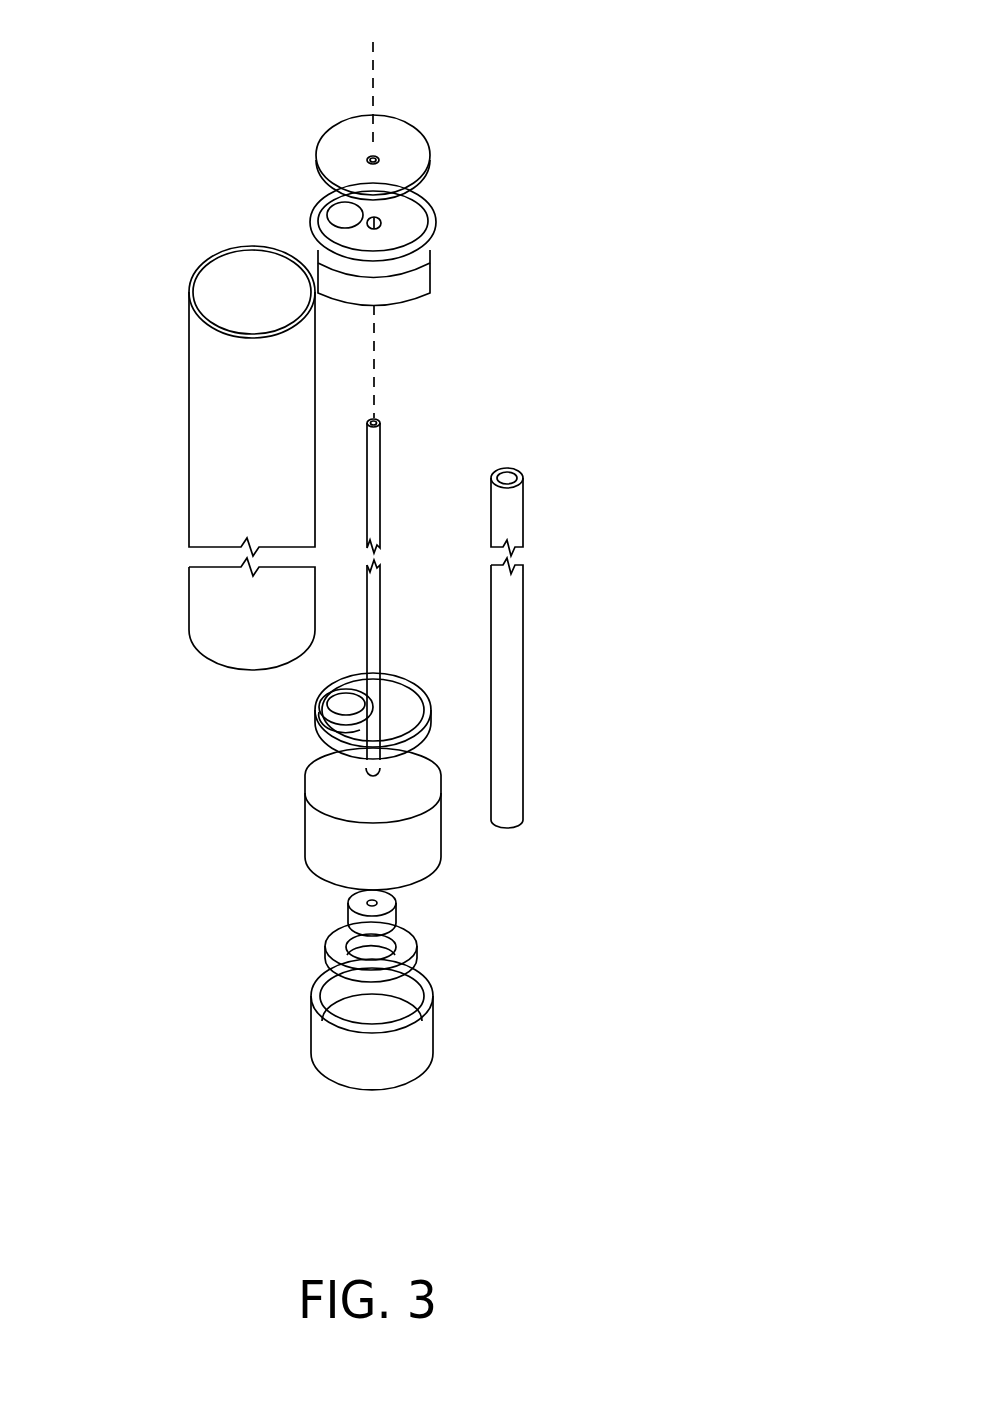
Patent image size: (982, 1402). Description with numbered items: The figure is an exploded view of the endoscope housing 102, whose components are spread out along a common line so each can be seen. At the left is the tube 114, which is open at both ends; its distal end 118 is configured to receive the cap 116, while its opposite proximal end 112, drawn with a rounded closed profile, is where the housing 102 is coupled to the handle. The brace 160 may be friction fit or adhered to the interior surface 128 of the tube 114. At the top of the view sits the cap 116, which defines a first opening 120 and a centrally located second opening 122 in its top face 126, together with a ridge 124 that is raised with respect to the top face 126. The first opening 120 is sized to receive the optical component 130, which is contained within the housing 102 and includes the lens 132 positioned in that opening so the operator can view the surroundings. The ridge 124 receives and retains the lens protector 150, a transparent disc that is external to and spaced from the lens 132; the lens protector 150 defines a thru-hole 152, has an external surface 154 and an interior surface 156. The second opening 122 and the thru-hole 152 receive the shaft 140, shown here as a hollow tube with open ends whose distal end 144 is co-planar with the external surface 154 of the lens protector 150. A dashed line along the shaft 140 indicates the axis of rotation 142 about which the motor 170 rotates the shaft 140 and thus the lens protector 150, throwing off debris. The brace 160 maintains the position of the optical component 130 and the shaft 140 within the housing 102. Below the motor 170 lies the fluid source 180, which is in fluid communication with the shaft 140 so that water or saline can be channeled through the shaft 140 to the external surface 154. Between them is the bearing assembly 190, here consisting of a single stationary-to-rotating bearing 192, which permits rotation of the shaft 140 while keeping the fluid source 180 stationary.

The housing 102 is at (168, 378).
The proximal end 112 is at (208, 658).
The tube 114 is at (189, 490).
The cap 116 is at (437, 219).
The distal end of the tube 118 is at (196, 268).
The first opening 120 is at (328, 206).
The second opening 122 is at (381, 223).
The ridge 124 is at (437, 240).
The top face 126 is at (355, 238).
The interior surface 128 is at (242, 270).
The optical component 130 is at (524, 660).
The lens 132 is at (516, 470).
The shaft 140 is at (382, 612).
The axis of rotation 142 is at (377, 352).
The distal end of the shaft 144 is at (378, 420).
The lens protector 150 is at (403, 133).
The thru-hole 152 is at (389, 156).
The external surface 154 is at (336, 136).
The interior surface of the lens protector 156 is at (418, 154).
The brace 160 is at (415, 684).
The motor 170 is at (305, 828).
The fluid source 180 is at (434, 1020).
The bearing assembly 190 is at (518, 908).
The bearing 192 is at (432, 958).